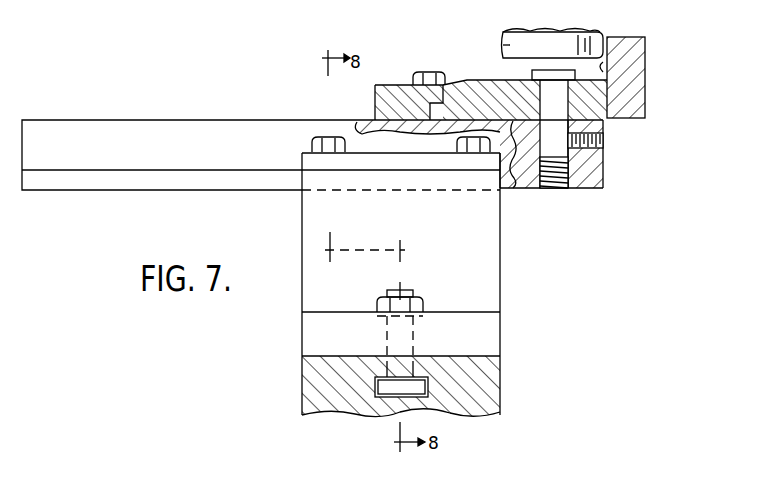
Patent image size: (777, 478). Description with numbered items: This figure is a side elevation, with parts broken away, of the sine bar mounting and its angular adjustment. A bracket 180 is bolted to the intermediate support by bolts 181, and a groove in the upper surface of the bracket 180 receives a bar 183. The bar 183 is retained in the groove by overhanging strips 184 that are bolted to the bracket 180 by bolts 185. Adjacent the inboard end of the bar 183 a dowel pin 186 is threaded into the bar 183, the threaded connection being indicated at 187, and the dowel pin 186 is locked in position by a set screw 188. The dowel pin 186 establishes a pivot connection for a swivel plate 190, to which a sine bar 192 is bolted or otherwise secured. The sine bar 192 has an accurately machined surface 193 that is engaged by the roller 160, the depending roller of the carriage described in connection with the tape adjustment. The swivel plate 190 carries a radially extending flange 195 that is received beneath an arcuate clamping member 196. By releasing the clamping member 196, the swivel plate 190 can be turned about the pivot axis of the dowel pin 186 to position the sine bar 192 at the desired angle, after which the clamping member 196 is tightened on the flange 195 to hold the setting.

The roller 160 is at (503, 44).
The bracket 180 is at (490, 300).
The bolts 181 is at (405, 306).
The bar 183 is at (222, 130).
The overhanging strips 184 is at (301, 161).
The bolts 185 is at (330, 142).
The dowel pin 186 is at (555, 131).
The threaded connection 187 is at (565, 186).
The set screw 188 is at (603, 141).
The swivel plate 190 is at (497, 82).
The sine bar 192 is at (638, 72).
The machined surface 193 is at (606, 68).
The flange 195 is at (443, 110).
The clamping member 196 is at (388, 98).